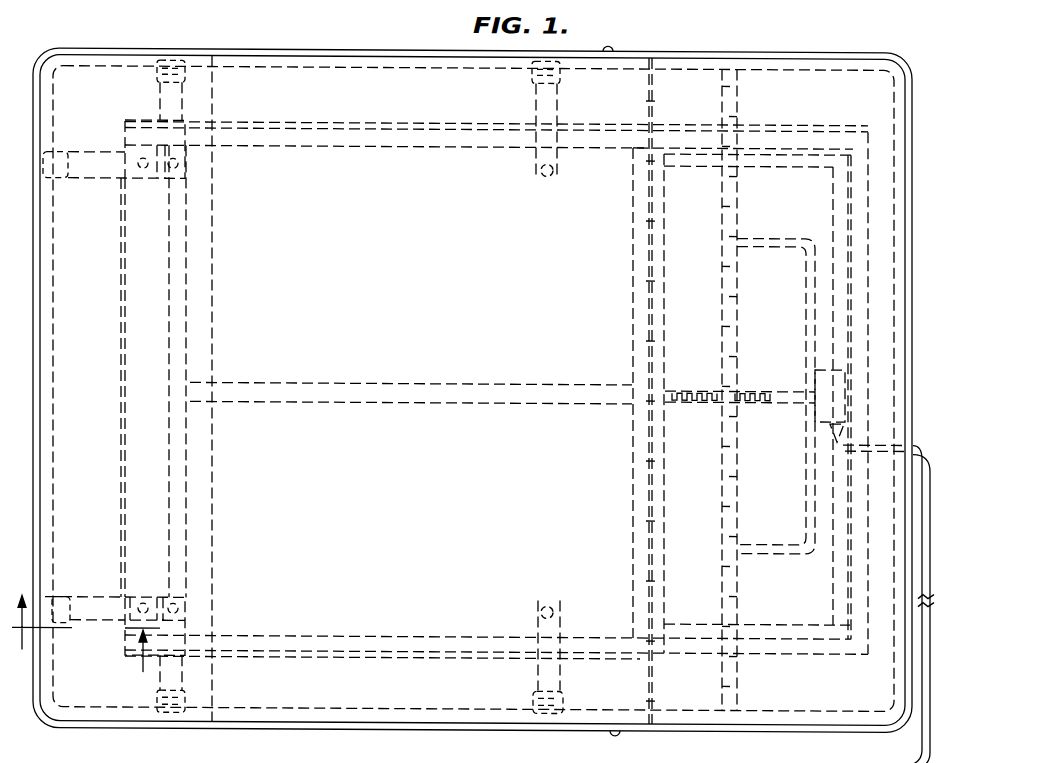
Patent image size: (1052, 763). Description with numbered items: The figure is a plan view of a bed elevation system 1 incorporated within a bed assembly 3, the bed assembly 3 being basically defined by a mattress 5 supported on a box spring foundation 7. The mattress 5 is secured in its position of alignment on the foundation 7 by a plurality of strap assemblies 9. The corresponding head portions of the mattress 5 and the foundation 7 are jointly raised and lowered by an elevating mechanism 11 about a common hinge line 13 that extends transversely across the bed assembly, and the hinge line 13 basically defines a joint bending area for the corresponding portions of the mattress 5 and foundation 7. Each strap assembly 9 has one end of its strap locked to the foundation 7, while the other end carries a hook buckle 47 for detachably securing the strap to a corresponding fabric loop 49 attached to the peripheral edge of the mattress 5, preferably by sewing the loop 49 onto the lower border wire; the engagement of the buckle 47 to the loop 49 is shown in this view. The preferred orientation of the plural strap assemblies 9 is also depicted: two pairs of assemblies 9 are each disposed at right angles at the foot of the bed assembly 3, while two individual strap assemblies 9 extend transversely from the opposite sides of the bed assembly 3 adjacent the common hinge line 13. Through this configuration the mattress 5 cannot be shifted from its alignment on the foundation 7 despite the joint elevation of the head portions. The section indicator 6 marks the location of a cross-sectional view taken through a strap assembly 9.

The bed elevation system 1 is at (773, 50).
The bed assembly 3 is at (240, 51).
The mattress 5 is at (835, 92).
The section line 6- 6 is at (86, 627).
The box spring foundation 7 is at (332, 137).
The strap assembly 9 is at (180, 112).
The elevating mechanism 11 is at (748, 390).
The common hinge line 13 is at (650, 92).
The hook buckle 47 is at (566, 706).
The fabric loop 49 is at (68, 592).